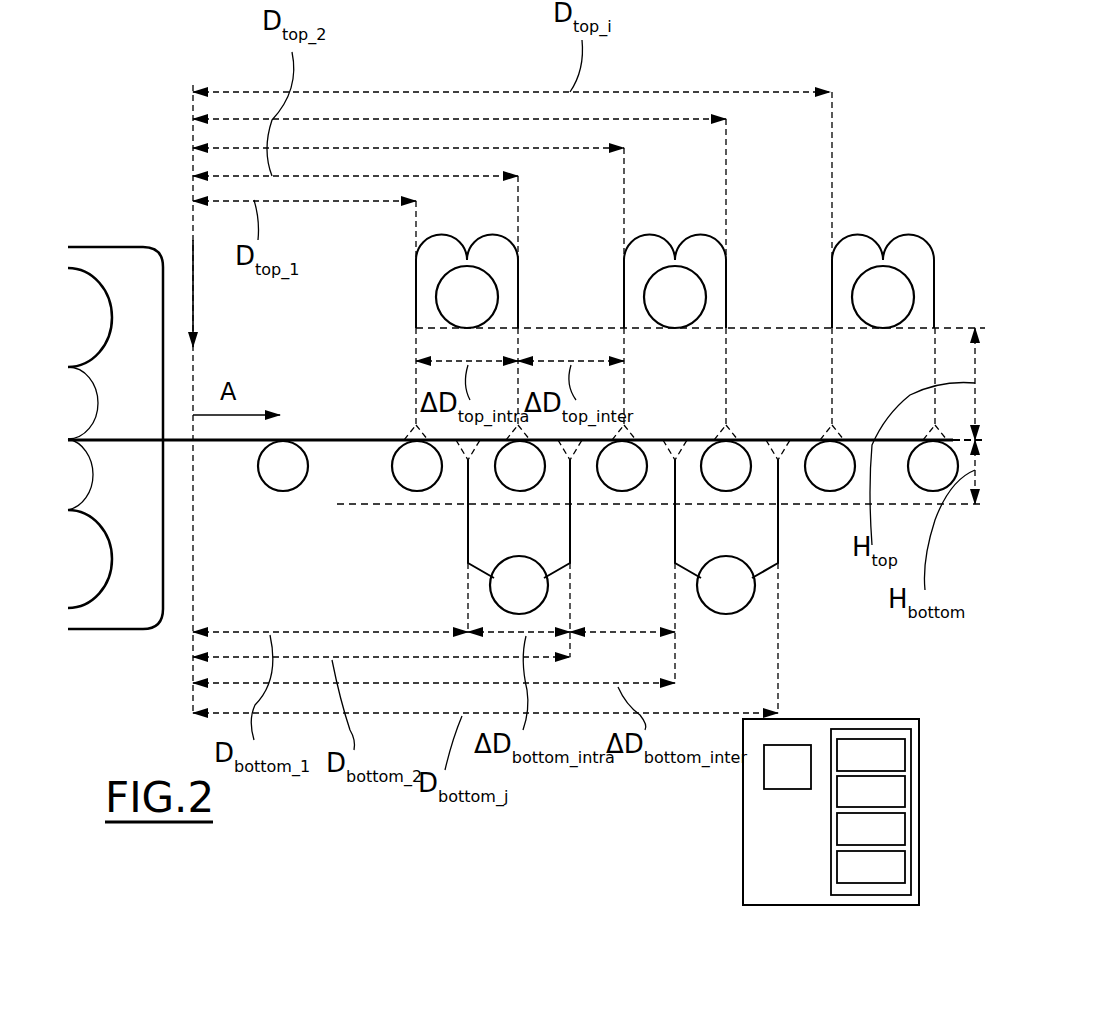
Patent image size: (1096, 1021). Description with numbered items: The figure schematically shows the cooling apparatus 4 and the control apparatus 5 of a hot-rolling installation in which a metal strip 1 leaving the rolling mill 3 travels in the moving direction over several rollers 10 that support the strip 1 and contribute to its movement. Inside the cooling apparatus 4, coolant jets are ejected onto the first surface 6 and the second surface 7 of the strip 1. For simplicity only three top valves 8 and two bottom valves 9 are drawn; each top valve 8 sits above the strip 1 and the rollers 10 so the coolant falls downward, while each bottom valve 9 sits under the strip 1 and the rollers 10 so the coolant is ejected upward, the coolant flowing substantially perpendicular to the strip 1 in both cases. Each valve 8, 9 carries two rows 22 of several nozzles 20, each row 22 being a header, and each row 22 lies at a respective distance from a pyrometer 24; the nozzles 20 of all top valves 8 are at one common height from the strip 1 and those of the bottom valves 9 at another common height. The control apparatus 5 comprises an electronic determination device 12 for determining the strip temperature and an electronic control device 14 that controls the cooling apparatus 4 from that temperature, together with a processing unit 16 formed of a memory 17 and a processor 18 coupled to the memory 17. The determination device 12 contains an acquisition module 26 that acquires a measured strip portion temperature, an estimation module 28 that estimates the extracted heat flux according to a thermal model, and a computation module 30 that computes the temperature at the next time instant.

The metal strip 1 is at (313, 432).
The rolling mill 3 is at (100, 215).
The cooling apparatus 4 is at (920, 206).
The control apparatus 5 is at (781, 813).
The first surface 6 is at (345, 438).
The second surface 7 is at (323, 442).
The top valve 8 is at (394, 281).
The bottom valve 9 is at (450, 582).
The roller 10 is at (275, 470).
The electronic determination device 12 is at (908, 814).
The electronic control device 14 is at (871, 867).
The processing unit 16 is at (801, 812).
The memory 17 is at (842, 812).
The processor 18 is at (787, 767).
The nozzle 20 is at (416, 312).
The row of nozzles 22 is at (492, 232).
The pyrometer 24 is at (195, 310).
The acquisition module 26 is at (871, 755).
The estimation module 28 is at (871, 791).
The computation module 30 is at (871, 829).